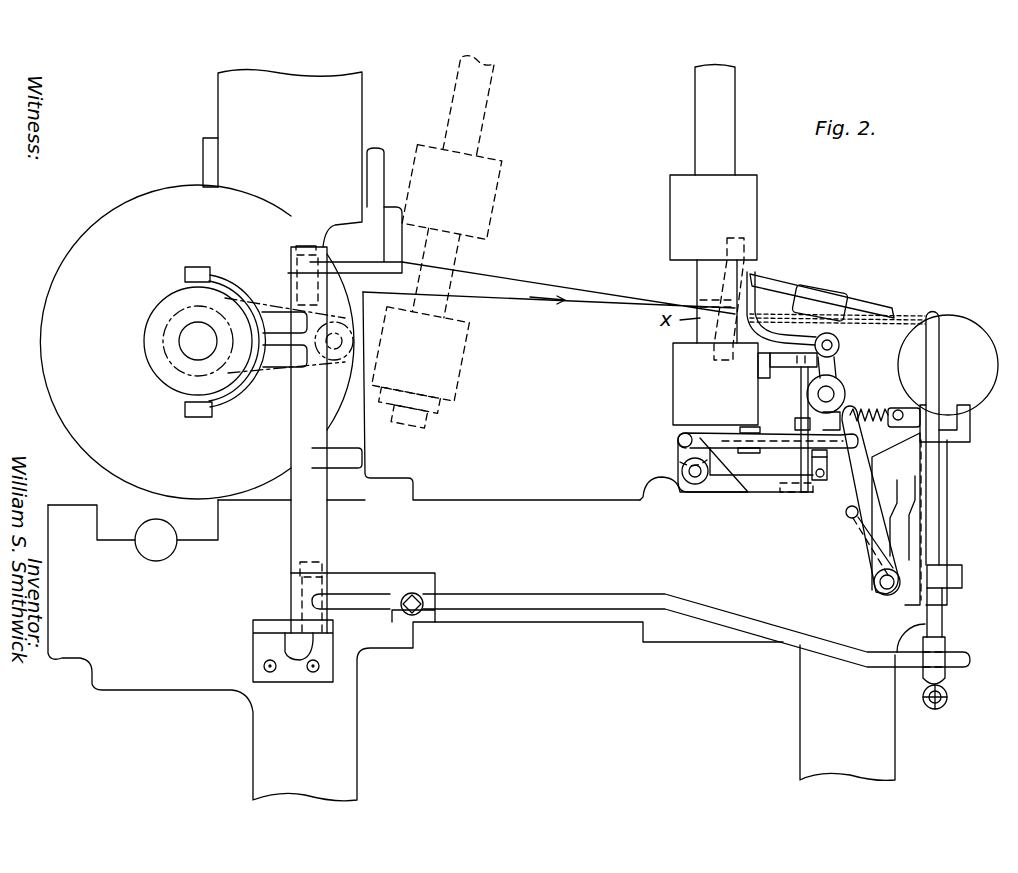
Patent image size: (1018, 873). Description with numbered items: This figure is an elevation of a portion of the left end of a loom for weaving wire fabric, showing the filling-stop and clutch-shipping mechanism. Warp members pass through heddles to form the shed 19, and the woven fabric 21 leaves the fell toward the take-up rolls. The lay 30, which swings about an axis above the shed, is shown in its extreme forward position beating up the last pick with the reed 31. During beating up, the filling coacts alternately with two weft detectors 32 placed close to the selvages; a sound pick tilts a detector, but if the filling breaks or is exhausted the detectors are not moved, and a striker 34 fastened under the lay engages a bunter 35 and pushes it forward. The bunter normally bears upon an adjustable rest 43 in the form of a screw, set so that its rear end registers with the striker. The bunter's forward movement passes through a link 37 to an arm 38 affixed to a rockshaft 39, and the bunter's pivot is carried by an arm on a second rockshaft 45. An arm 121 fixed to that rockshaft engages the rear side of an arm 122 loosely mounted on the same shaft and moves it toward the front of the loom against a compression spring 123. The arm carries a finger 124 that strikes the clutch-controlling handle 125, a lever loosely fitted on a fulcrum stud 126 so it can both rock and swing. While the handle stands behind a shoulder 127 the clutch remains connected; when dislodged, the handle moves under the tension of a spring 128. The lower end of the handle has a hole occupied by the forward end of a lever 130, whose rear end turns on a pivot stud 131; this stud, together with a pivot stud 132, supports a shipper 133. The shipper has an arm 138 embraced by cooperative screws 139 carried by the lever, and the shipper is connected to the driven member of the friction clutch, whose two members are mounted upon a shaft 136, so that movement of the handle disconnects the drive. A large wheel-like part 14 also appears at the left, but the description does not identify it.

The fly-wheel 14 is at (42, 352).
The shed 19 is at (570, 283).
The woven fabric 21 is at (805, 310).
The lay 30 is at (498, 180).
The reed 31 is at (726, 277).
The weft detectors 32 is at (755, 295).
The striker 34 is at (455, 430).
The bunter 35 is at (745, 428).
The link 37 is at (735, 450).
The arm 38 is at (683, 457).
The rockshaft 39 is at (693, 478).
The rest 43 is at (818, 478).
The rockshaft 45 is at (880, 590).
The arm 121 is at (850, 524).
The arm 122 is at (866, 548).
The compression spring 123 is at (868, 410).
The finger 124 is at (905, 445).
The clutch-controlling handle 125 is at (938, 345).
The fulcrum stud 126 is at (955, 572).
The shoulder 127 is at (942, 410).
The spring 128 is at (947, 703).
The lever 130 is at (783, 633).
The pivot stud 131 is at (297, 567).
The pivot stud 132 is at (302, 250).
The shipper 133 is at (298, 432).
The shaft 136 is at (186, 341).
The arm 138 is at (440, 583).
The screws 139 is at (428, 625).